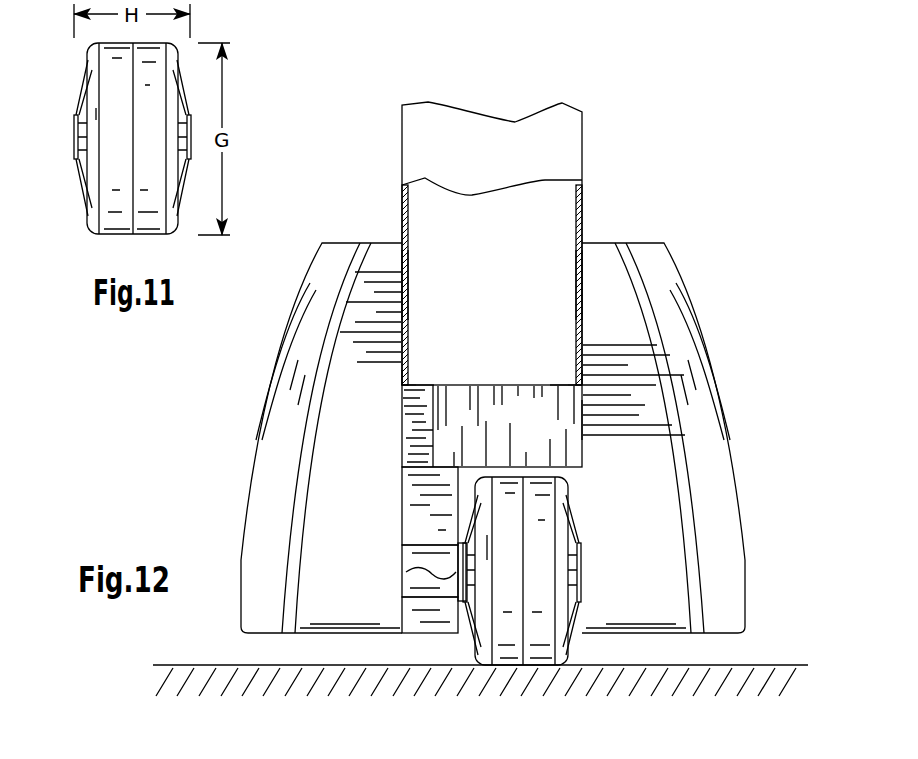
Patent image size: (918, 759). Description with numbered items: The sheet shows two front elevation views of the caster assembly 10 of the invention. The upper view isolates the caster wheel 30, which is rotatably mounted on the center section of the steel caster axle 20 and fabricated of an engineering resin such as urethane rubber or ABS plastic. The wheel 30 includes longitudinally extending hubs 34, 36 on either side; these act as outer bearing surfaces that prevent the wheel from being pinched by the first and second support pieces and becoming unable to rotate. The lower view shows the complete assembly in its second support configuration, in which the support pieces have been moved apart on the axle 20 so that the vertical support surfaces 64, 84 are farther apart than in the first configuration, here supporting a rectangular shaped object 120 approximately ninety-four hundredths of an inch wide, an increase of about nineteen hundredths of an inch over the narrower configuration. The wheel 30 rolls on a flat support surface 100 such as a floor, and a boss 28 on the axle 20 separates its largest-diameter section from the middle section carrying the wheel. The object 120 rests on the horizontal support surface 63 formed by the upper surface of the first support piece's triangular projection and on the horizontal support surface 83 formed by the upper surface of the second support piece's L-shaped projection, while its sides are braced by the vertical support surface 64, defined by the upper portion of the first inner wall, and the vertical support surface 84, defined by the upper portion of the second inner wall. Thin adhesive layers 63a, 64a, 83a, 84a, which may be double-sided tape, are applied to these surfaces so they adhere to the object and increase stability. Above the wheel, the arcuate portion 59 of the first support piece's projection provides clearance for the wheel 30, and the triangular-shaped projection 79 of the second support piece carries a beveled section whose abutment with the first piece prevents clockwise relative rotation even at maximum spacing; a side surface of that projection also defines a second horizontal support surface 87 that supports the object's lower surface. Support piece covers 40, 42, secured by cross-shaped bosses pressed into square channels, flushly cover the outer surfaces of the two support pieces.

In FIG. 12, the caster assembly 10 is at (479, 427).
In FIG. 12, the rectangular shaped object 120 is at (528, 160).
In FIG. 12, the support piece cover 40 is at (259, 411).
In FIG. 12, the support piece cover 42 is at (702, 322).
In FIG. 12, the second horizontal support surface 87 is at (580, 420).
In FIG. 12, the triangular-shaped projection 79 is at (547, 432).
In FIG. 12, the arcuate portion 59 is at (402, 508).
In FIG. 12, the axially extending boss 28 is at (402, 562).
In FIG. 12, the caster axle 20 is at (418, 600).
In FIG. 11, the caster wheel 30 is at (58, 124).
In FIG. 12, the caster wheel 30 is at (530, 660).
In FIG. 11, the hub 34 is at (78, 190).
In FIG. 12, the hub 34 is at (465, 604).
In FIG. 11, the hub 36 is at (186, 188).
In FIG. 12, the hub 36 is at (583, 603).
In FIG. 12, the flat support surface 100 is at (758, 665).
In FIG. 12, the adhesive layer 64a is at (408, 279).
In FIG. 12, the vertical support surface 64 is at (408, 322).
In FIG. 12, the horizontal support surface 63 is at (414, 384).
In FIG. 12, the adhesive layer 63a is at (428, 384).
In FIG. 12, the adhesive layer 84a is at (576, 260).
In FIG. 12, the vertical support surface 84 is at (576, 302).
In FIG. 12, the horizontal support surface 83 is at (570, 384).
In FIG. 12, the adhesive layer 83a is at (546, 384).